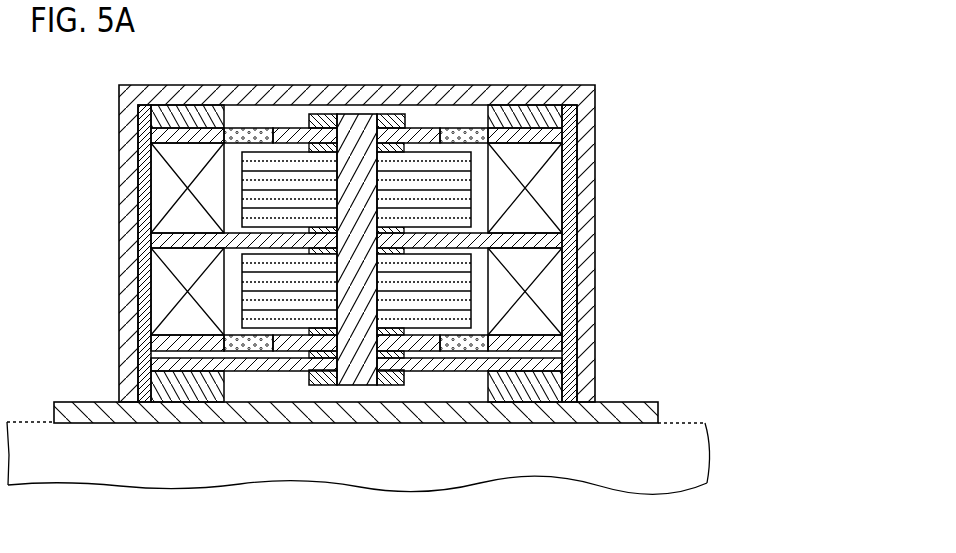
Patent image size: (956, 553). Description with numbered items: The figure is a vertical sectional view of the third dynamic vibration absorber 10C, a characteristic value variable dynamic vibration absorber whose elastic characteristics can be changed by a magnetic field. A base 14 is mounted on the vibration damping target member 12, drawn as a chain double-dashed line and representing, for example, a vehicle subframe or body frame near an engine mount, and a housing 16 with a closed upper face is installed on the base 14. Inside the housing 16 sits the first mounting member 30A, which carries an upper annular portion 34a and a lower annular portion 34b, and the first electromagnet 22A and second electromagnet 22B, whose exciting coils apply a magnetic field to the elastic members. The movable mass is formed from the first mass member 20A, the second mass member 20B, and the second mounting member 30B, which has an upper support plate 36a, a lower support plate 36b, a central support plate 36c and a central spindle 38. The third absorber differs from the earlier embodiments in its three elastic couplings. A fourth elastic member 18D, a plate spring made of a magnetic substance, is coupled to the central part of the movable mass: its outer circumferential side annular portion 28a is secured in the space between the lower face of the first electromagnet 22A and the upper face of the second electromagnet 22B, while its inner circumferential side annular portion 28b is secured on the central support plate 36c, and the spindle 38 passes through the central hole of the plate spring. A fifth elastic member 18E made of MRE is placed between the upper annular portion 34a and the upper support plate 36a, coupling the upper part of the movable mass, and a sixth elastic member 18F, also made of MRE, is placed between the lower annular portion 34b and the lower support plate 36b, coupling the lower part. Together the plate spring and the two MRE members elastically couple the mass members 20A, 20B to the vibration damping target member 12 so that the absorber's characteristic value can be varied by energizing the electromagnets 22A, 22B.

The third dynamic vibration absorber 10C is at (80, 68).
The vibration damping target member 12 is at (32, 422).
The base 14 is at (632, 401).
The housing 16 is at (173, 84).
The fourth elastic member 18D is at (448, 251).
The fifth elastic member 18E is at (457, 126).
The sixth elastic member 18F is at (450, 354).
The first mass member 20A is at (257, 180).
The second mass member 20B is at (257, 282).
The first electromagnet 22A is at (548, 175).
The second electromagnet 22B is at (548, 305).
The outer circumferential side annular portion 28a is at (492, 251).
The inner circumferential side annular portion 28b is at (385, 252).
The first mounting member 30A is at (543, 104).
The second mounting member 30B is at (317, 111).
The upper annular portion 34a is at (508, 128).
The lower annular portion 34b is at (542, 352).
The upper support plate 36a is at (383, 128).
The lower support plate 36b is at (393, 253).
The central support plate 36c is at (381, 251).
The spindle 38 is at (357, 124).